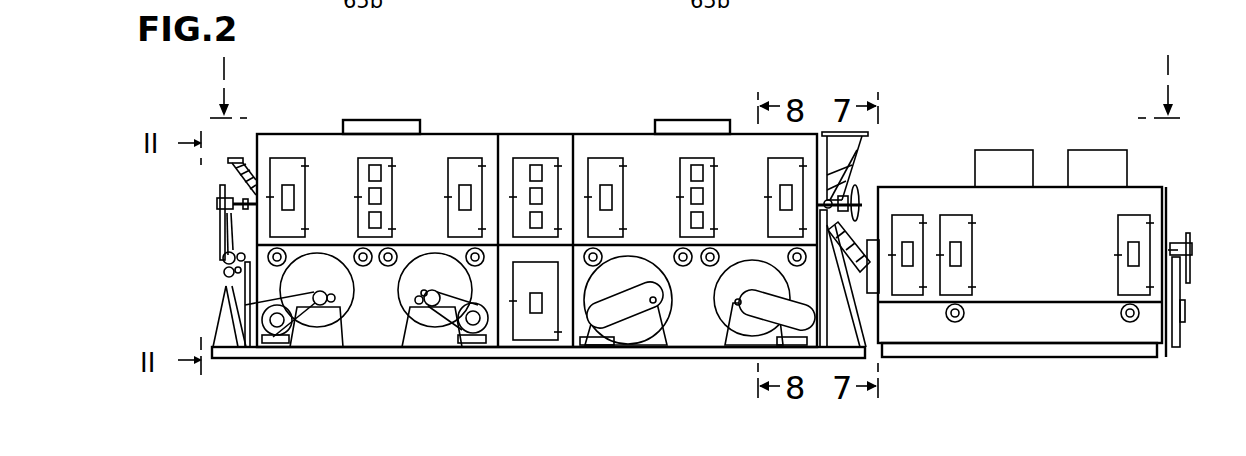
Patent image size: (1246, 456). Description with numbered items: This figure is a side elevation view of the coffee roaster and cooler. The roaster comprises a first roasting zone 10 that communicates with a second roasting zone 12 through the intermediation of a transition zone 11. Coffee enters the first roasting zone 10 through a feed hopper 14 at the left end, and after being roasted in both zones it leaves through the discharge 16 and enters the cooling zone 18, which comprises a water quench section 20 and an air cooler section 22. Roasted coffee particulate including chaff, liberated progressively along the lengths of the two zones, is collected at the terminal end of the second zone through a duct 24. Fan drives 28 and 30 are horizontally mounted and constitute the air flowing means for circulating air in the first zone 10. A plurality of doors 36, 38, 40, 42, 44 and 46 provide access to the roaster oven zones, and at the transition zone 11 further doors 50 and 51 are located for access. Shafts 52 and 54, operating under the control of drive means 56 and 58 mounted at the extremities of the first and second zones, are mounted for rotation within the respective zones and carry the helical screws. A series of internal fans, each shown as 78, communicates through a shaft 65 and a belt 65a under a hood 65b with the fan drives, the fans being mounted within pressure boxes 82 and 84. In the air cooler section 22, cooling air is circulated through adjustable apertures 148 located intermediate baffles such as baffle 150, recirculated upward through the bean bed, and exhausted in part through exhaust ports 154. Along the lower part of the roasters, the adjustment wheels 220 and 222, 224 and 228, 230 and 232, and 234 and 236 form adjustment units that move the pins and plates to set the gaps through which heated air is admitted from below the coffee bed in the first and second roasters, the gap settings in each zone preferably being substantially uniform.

The first roasting zone 10 is at (339, 201).
The transition zone 11 is at (518, 128).
The second roasting zone 12 is at (661, 174).
The feed hopper 14 is at (238, 158).
The discharge 16 is at (858, 233).
The cooling zone 18 is at (953, 160).
The water quench section 20 is at (954, 212).
The air cooler section 22 is at (1068, 254).
The duct 24 is at (847, 162).
The fan drive 28 is at (288, 322).
The fan drive 30 is at (458, 330).
The door 36 is at (290, 168).
The door 38 is at (385, 165).
The door 40 is at (463, 177).
The door 42 is at (605, 165).
The door 44 is at (706, 163).
The door 46 is at (778, 177).
The door 50 is at (535, 167).
The door 51 is at (540, 328).
The shaft 52 is at (217, 200).
The shaft 54 is at (845, 192).
The drive means 56 is at (212, 238).
The drive means 58 is at (860, 195).
The shaft 65 is at (321, 290).
The belt 65a is at (245, 305).
The hood 65b is at (617, 315).
The internal fan 78 is at (323, 273).
The pressure box 82 is at (368, 337).
The pressure box 84 is at (703, 335).
The adjustable aperture 148 is at (1167, 263).
The baffle 150 is at (1182, 278).
The exhaust port 154 is at (1022, 180).
The wheel 220 is at (270, 262).
The wheel 222 is at (361, 268).
The wheel 224 is at (388, 266).
The wheel 228 is at (452, 250).
The wheel 230 is at (587, 259).
The wheel 232 is at (658, 272).
The wheel 234 is at (714, 262).
The wheel 236 is at (785, 253).